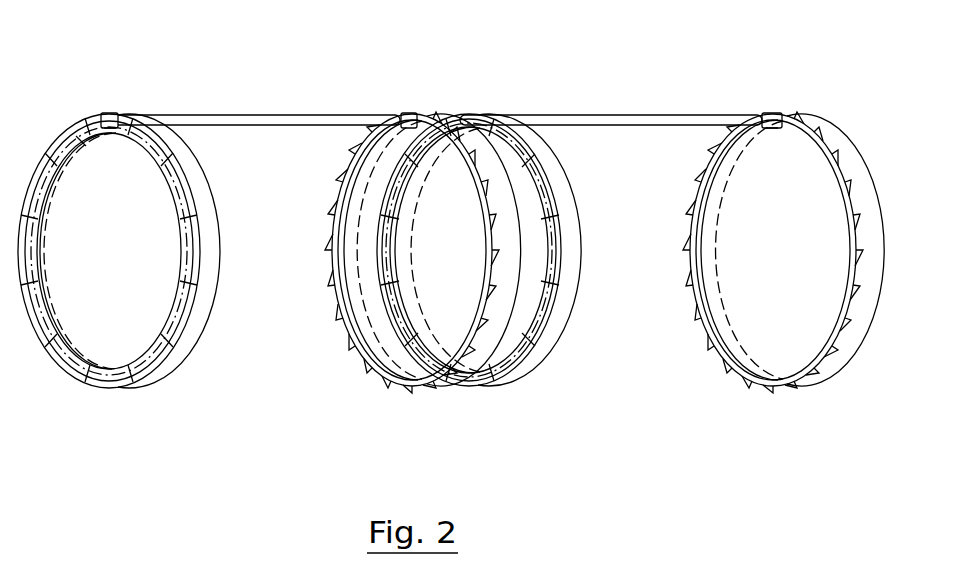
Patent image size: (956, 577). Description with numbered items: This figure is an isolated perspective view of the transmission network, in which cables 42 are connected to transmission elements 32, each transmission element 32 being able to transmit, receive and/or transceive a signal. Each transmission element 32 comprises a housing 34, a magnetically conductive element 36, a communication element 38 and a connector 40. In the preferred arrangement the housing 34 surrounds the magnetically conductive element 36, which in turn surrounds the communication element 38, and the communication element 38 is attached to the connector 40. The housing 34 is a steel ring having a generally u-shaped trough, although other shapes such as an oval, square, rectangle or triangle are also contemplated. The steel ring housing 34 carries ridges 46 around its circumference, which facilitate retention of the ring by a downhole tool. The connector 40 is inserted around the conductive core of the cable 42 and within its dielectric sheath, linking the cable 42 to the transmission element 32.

The transmission element 32 is at (107, 114).
The housing 34 is at (93, 114).
The magnetically conductive element 36 is at (56, 137).
The communication element 38 is at (80, 140).
The connector 40 is at (112, 130).
The cable 42 is at (238, 114).
The ridges 46 is at (357, 350).